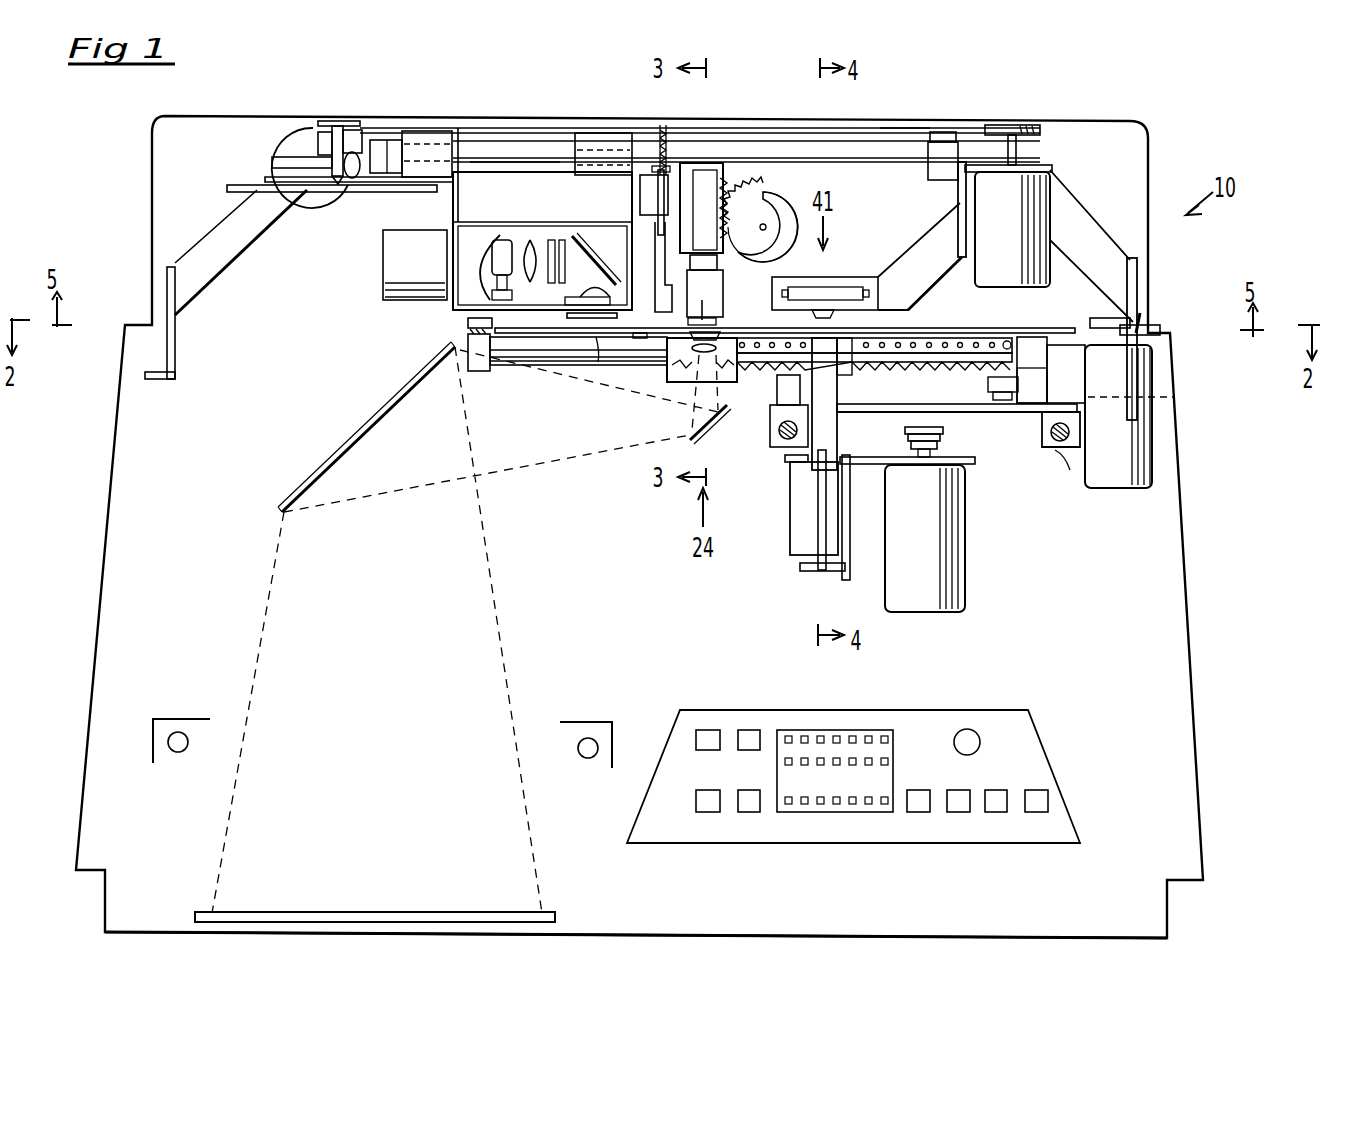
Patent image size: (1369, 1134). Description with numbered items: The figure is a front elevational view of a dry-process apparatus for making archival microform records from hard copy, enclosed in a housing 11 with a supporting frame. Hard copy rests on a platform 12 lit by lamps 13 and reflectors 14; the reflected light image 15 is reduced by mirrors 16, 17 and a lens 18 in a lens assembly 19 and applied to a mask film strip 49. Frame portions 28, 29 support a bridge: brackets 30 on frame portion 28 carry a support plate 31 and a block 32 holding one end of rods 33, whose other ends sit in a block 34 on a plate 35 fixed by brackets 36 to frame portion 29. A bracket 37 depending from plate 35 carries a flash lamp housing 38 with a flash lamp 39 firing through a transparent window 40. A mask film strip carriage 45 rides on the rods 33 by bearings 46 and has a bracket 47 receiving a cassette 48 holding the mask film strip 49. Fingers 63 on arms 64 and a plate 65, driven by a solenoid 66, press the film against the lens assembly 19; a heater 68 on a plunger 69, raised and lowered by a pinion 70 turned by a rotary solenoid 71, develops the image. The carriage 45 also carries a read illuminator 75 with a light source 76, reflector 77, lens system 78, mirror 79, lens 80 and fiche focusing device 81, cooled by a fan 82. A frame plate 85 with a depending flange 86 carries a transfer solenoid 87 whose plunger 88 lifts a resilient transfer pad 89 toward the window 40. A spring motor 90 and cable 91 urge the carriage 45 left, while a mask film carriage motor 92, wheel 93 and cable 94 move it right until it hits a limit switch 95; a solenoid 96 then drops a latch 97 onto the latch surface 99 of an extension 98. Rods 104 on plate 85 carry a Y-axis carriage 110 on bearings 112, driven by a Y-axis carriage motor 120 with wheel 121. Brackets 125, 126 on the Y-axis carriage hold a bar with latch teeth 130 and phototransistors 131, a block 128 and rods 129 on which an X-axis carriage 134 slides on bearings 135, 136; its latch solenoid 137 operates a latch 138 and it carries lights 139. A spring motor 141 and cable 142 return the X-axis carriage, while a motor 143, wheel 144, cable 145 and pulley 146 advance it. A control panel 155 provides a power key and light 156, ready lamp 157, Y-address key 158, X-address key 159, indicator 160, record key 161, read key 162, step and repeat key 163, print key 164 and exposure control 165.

The housing 11 is at (100, 526).
The platform 12 is at (358, 912).
The lamps 13 is at (178, 753).
The reflectors 14 is at (184, 719).
The light image 15 is at (504, 462).
The mirror 16 is at (360, 438).
The mirror 17 is at (708, 430).
The lens 18 is at (667, 362).
The lens assembly 19 is at (686, 378).
The frame portion 28 is at (178, 340).
The frame portion 29 is at (1138, 266).
The brackets 30 is at (225, 262).
The support plate 31 is at (272, 160).
The block 32 is at (392, 175).
The rods 33 is at (493, 141).
The block 34 is at (932, 172).
The plate 35 is at (1040, 165).
The brackets 36 is at (1080, 212).
The bracket 37 is at (913, 252).
The flash lamp housing 38 is at (862, 278).
The flash lamp 39 is at (825, 296).
The transparent window 40 is at (818, 305).
The mask film strip carriage 45 is at (558, 128).
The bearings 46 is at (430, 135).
The bracket 47 is at (667, 135).
The cassette 48 is at (724, 290).
The mask film strip 49 is at (714, 334).
The fingers 63 is at (702, 322).
The arms 64 is at (660, 290).
The plate 65 is at (661, 228).
The solenoid 66 is at (640, 193).
The heater 68 is at (718, 262).
The plunger 69 is at (708, 180).
The pinion 70 is at (729, 212).
The rotary solenoid 71 is at (795, 214).
The read illuminator 75 is at (461, 225).
The light source 76 is at (500, 240).
The reflector 77 is at (480, 272).
The lens system 78 is at (530, 240).
The mirror 79 is at (585, 240).
The lens 80 is at (597, 290).
The fiche focusing device 81 is at (567, 315).
The fan 82 is at (383, 266).
The plate 85 is at (858, 457).
The depending flange 86 is at (852, 562).
The transfer solenoid 87 is at (792, 528).
The plunger 88 is at (836, 400).
The resilient transfer pad 89 is at (833, 360).
The spring motor 90 is at (297, 137).
The cable 91 is at (366, 124).
The mask film carriage motor 92 is at (1045, 196).
The wheel 93 is at (1005, 125).
The cable 94 is at (903, 128).
The mask film carriage limit switch 95 is at (945, 133).
The solenoid 96 is at (322, 150).
The latch 97 is at (339, 186).
The extension 98 is at (352, 180).
The latch surface 99 is at (235, 187).
The rods 104 is at (786, 458).
The Y-axis carriage 110 is at (982, 413).
The bearings 112 is at (776, 420).
The Y-axis carriage motor 120 is at (965, 566).
The wheel 121 is at (944, 436).
The bracket 125 is at (1070, 393).
The bracket 126 is at (780, 388).
The block 128 is at (478, 371).
The rods 129 is at (548, 365).
The latch teeth 130 is at (899, 364).
The phototransistors 131 is at (940, 366).
The X-axis carriage 134 is at (975, 338).
The bearings 135 is at (1039, 340).
The bearings 136 is at (860, 334).
The latch solenoid 137 is at (1004, 400).
The latch 138 is at (988, 385).
The lights 139 is at (1008, 340).
The spring motor 141 is at (1176, 405).
The cable 142 is at (1047, 384).
The motor 143 is at (1152, 446).
The wheel 144 is at (1138, 330).
The cable 145 is at (1080, 332).
The pulley 146 is at (468, 326).
The control panel 155 is at (1052, 762).
The A.C. power key and light 156 is at (708, 812).
The ready lamp 157 is at (706, 730).
The Y-address key 158 is at (748, 812).
The X-address key 159 is at (748, 730).
The indicator 160 is at (812, 812).
The record key and light 161 is at (912, 812).
The read key and light 162 is at (954, 812).
The step and repeat key 163 is at (996, 812).
The print key 164 is at (1038, 812).
The exposure control 165 is at (973, 731).